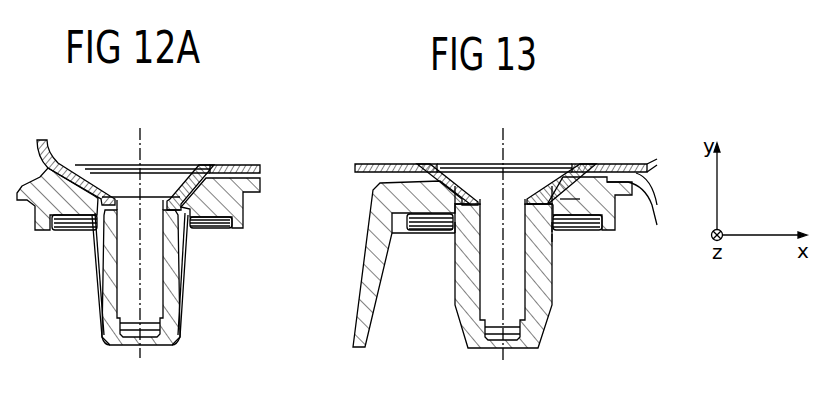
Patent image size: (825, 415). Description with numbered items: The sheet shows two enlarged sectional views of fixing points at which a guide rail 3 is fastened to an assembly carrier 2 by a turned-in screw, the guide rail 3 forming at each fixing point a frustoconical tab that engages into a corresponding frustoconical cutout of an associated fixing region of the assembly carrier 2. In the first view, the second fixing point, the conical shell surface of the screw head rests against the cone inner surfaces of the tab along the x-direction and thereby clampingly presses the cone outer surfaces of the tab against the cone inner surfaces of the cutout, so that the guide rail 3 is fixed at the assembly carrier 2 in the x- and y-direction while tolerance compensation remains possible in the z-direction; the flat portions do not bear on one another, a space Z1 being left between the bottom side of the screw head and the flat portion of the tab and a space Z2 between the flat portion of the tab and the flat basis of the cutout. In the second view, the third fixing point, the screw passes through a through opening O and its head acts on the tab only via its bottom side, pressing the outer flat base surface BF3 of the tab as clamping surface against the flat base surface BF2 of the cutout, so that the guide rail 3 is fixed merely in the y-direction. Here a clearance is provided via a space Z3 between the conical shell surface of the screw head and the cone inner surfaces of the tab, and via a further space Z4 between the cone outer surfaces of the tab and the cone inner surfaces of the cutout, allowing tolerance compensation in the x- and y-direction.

In FIG. 12A, the assembly carrier 2 is at (70, 238).
In FIG. 13, the assembly carrier 2 is at (614, 282).
In FIG. 12A, the guide rail 3 is at (232, 160).
In FIG. 13, the guide rail 3 is at (386, 157).
In FIG. 12A, the space Z1 is at (110, 196).
In FIG. 12A, the space Z2 is at (173, 210).
In FIG. 13, the space Z3 is at (575, 172).
In FIG. 13, the space Z4 is at (533, 207).
In FIG. 13, the flat base surface BF2 is at (553, 230).
In FIG. 13, the flat base surface BF3 is at (456, 228).
In FIG. 13, the through opening O is at (552, 238).